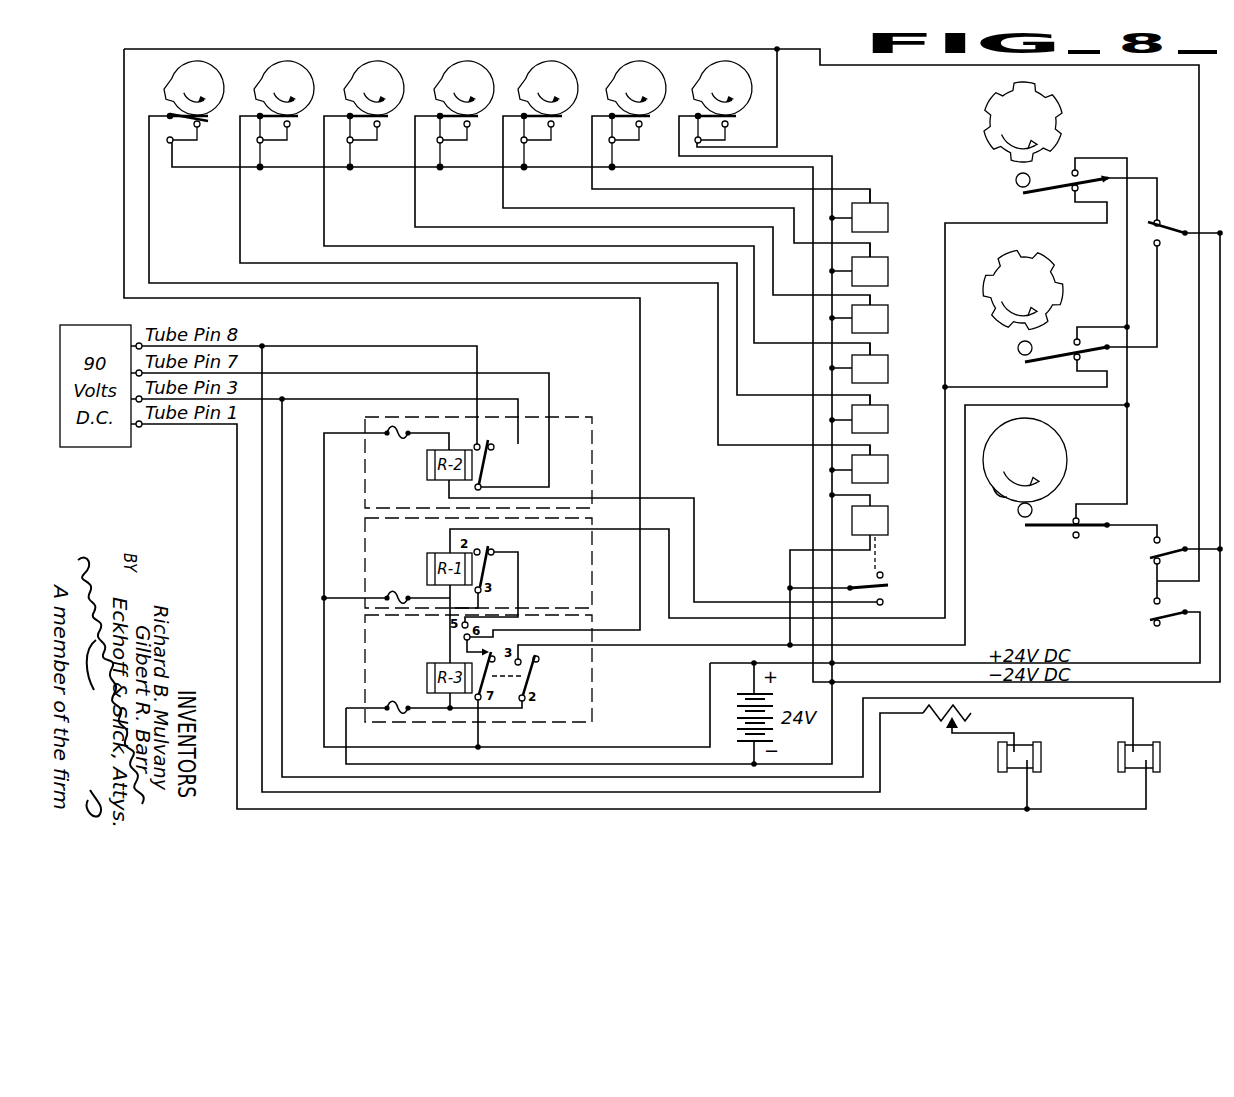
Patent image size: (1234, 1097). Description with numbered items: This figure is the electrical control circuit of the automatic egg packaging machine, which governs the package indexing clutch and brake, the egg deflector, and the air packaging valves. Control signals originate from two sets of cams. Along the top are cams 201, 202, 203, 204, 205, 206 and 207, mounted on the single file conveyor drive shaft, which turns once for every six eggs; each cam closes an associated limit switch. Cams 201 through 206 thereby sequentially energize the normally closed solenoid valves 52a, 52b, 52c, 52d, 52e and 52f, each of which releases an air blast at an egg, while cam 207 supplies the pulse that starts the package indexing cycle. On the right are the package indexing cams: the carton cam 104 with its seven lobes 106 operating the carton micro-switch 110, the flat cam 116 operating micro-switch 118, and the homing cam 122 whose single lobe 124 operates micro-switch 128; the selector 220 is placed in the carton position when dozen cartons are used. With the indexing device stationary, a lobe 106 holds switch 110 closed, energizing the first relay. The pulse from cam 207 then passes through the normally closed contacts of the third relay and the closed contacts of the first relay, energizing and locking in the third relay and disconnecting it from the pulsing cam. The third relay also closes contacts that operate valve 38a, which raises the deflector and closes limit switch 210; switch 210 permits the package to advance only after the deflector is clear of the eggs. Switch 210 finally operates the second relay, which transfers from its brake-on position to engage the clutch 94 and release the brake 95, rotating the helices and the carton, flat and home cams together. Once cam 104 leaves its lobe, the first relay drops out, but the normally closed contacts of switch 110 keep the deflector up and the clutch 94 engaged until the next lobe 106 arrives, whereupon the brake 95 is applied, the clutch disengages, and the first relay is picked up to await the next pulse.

The cam 201 is at (509, 258).
The cam 202 is at (555, 233).
The cam 203 is at (597, 208).
The cam 204 is at (642, 183).
The cam 205 is at (686, 159).
The cam 206 is at (731, 132).
The cam 207 is at (589, 412).
The solenoid valve 52a is at (890, 464).
The solenoid valve 52b is at (890, 414).
The solenoid valve 52c is at (889, 363).
The solenoid valve 52d is at (890, 314).
The solenoid valve 52e is at (890, 264).
The solenoid valve 52f is at (889, 210).
The valve 38a is at (890, 520).
The limit switch 210 is at (890, 586).
The carton cam 104 is at (1023, 122).
The lobe 106 is at (1013, 174).
The micro-switch 110 is at (1093, 158).
The selector 220 is at (1160, 224).
The flat cam 116 is at (1023, 289).
The micro-switch 118 is at (1084, 332).
The homing cam 122 is at (1025, 460).
The lobe 124 is at (1008, 502).
The micro-switch 128 is at (1084, 509).
The clutch 94 is at (998, 776).
The brake 95 is at (1162, 750).